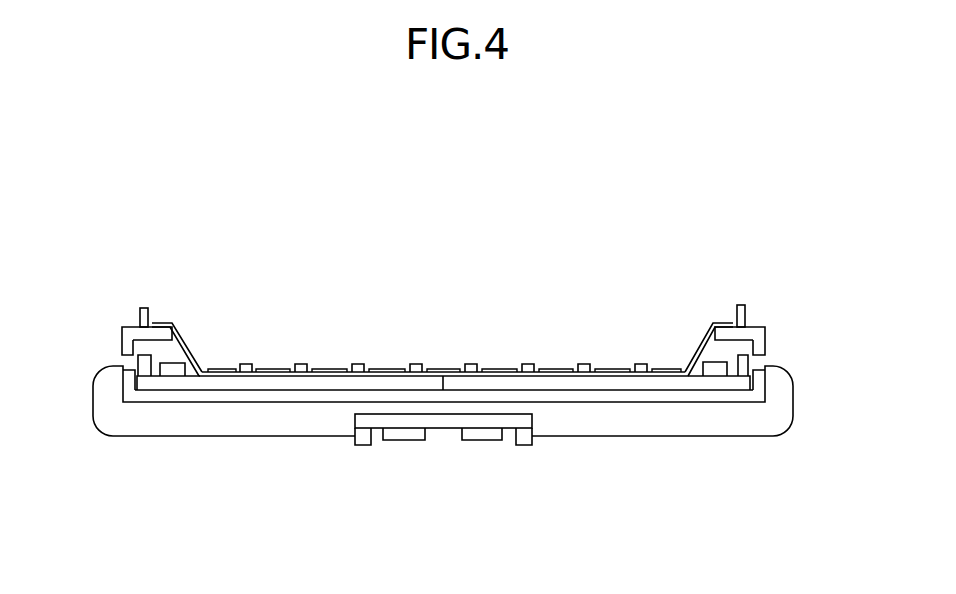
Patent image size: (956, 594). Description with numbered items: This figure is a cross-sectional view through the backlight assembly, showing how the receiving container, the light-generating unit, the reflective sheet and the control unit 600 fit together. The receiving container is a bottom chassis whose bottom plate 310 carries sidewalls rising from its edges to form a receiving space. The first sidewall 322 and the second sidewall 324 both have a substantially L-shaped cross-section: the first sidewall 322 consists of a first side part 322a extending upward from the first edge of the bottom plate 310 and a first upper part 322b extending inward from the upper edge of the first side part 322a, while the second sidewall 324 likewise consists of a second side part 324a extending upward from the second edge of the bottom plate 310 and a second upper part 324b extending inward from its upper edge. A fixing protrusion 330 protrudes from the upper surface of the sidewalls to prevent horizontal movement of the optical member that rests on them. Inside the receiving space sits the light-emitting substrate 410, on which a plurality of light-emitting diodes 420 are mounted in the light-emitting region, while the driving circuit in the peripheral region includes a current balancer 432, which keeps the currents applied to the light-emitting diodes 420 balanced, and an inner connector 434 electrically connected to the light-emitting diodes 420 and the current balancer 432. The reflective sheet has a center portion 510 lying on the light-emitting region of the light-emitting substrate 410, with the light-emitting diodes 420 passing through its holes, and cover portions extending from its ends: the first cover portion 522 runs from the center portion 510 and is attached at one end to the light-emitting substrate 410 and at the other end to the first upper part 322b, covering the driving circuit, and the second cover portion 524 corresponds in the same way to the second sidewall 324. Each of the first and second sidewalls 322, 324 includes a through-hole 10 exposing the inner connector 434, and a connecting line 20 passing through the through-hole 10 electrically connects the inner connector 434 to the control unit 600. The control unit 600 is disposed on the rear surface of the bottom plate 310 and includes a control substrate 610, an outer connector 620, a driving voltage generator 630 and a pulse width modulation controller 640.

The through-hole 10 is at (121, 351).
The connecting line 20 is at (245, 437).
The bottom plate 310 is at (611, 402).
The first sidewall 322 is at (97, 287).
The first side part 322a is at (124, 343).
The first upper part 322b is at (128, 297).
The second sidewall 324 is at (789, 282).
The second side part 324a is at (733, 249).
The second upper part 324b is at (751, 326).
The fixing protrusion 330 is at (148, 297).
The light-emitting substrate 410 is at (553, 382).
The light-emitting diodes 420 is at (472, 364).
The current balancer 432 is at (172, 374).
The inner connector 434 is at (143, 374).
The center portion 510 is at (388, 372).
The first cover portion 522 is at (188, 347).
The second cover portion 524 is at (698, 345).
The control unit 600 is at (437, 485).
The control substrate 610 is at (390, 420).
The outer connector 620 is at (363, 445).
The driving voltage generator 630 is at (418, 432).
The pulse width modulation controller 640 is at (504, 472).